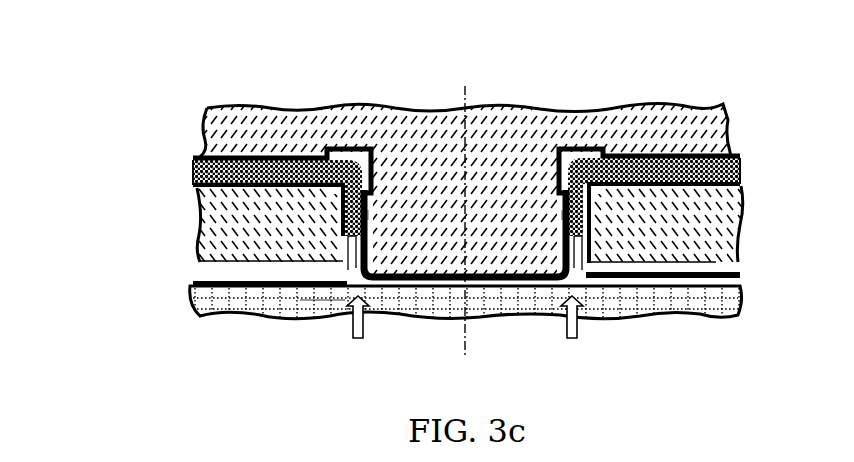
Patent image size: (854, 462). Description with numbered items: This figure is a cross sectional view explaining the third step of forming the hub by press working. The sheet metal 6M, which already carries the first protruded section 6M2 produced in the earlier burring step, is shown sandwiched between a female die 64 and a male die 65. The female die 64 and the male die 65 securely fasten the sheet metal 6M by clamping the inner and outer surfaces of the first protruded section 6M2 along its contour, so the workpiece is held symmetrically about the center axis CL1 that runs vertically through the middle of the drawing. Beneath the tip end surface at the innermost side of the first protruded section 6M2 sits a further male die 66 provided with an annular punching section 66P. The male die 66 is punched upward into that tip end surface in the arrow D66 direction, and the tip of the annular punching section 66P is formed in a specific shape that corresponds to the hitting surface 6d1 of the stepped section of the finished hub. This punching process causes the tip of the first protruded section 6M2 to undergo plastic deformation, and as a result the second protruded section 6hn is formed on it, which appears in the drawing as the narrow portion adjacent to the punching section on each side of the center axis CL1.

The male die 65 is at (240, 108).
The sheet metal 6M is at (194, 174).
The female die 64 is at (200, 233).
The second protruded section 6hn is at (343, 258).
The male die 66 is at (215, 318).
The annular punching section 66P is at (345, 300).
The arrow direction D66 is at (464, 331).
The hitting surface 6d1 is at (372, 213).
The center axis CL1 is at (459, 207).
The first protruded section 6M2 is at (593, 203).